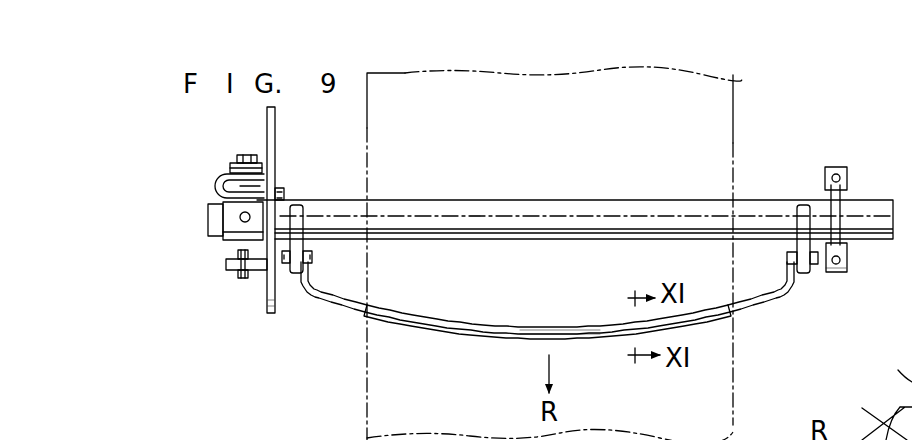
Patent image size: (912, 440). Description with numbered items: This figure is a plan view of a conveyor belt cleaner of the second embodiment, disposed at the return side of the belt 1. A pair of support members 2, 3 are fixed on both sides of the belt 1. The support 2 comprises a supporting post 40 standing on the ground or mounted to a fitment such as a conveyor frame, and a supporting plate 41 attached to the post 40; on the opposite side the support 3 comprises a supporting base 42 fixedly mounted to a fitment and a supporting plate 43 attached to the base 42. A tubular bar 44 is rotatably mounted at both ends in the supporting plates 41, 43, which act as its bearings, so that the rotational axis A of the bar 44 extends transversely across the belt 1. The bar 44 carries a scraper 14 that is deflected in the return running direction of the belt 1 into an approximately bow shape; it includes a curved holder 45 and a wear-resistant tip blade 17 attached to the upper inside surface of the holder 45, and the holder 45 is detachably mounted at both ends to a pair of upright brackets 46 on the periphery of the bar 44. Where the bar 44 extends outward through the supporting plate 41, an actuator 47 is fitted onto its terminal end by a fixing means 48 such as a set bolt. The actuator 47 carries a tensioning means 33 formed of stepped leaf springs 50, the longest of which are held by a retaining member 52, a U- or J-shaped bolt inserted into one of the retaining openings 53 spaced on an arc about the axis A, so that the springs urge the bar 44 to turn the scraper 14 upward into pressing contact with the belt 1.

The belt 1 is at (735, 126).
The support member 2 is at (266, 318).
The support member 3 is at (836, 277).
The scraper 14 is at (472, 338).
The tip blade 17 is at (516, 327).
The tensioning means 33 is at (238, 158).
The supporting post 40 is at (267, 302).
The supporting plate 41 is at (276, 128).
The supporting base 42 is at (847, 252).
The supporting plate 43 is at (847, 180).
The tubular bar 44 is at (632, 198).
The holder 45 is at (500, 340).
The bracket 46 is at (297, 205).
The actuator 47 is at (209, 210).
The fixing means 48 is at (242, 221).
The leaf springs 50 is at (894, 369).
The retaining member 52 is at (218, 186).
The retaining openings 53 is at (875, 411).
The rotational axis A is at (475, 215).